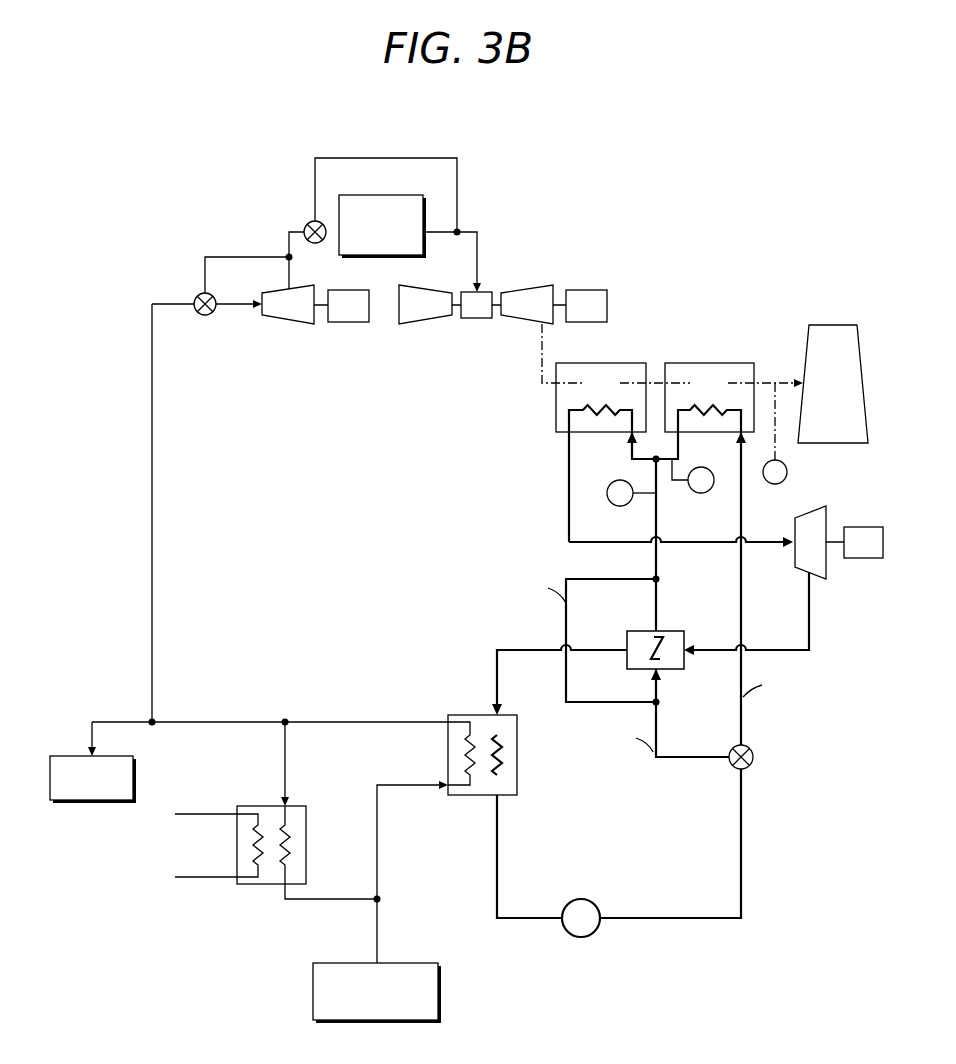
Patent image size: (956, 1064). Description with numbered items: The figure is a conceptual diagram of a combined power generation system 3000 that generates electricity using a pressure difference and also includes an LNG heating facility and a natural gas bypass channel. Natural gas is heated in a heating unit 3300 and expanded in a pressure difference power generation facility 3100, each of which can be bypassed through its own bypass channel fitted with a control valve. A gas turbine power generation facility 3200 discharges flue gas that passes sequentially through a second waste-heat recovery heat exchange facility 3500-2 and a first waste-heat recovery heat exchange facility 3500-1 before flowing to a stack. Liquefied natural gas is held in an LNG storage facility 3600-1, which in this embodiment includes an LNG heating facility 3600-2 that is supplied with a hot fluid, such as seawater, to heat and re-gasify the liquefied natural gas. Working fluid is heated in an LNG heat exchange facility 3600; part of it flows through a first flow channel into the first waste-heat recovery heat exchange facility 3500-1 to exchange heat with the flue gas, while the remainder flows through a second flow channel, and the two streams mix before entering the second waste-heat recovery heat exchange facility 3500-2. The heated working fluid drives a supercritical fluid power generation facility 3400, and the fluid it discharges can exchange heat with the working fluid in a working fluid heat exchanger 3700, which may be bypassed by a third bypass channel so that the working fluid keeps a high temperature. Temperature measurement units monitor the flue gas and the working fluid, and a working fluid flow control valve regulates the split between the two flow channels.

The combined power generation system 3000 is at (658, 175).
The pressure difference power generation facility 3100 is at (284, 328).
The gas turbine power generation facility 3200 is at (538, 279).
The heating unit 3300 is at (385, 195).
The supercritical fluid power generation facility 3400 is at (845, 579).
The first waste-heat recovery heat exchange facility 3500-1 is at (686, 363).
The second waste-heat recovery heat exchange facility 3500-2 is at (578, 363).
The LNG heat exchange facility 3600 is at (480, 715).
The LNG storage facility 3600-1 is at (390, 963).
The LNG heating facility 3600-2 is at (268, 806).
The working fluid heat exchanger 3700 is at (648, 631).